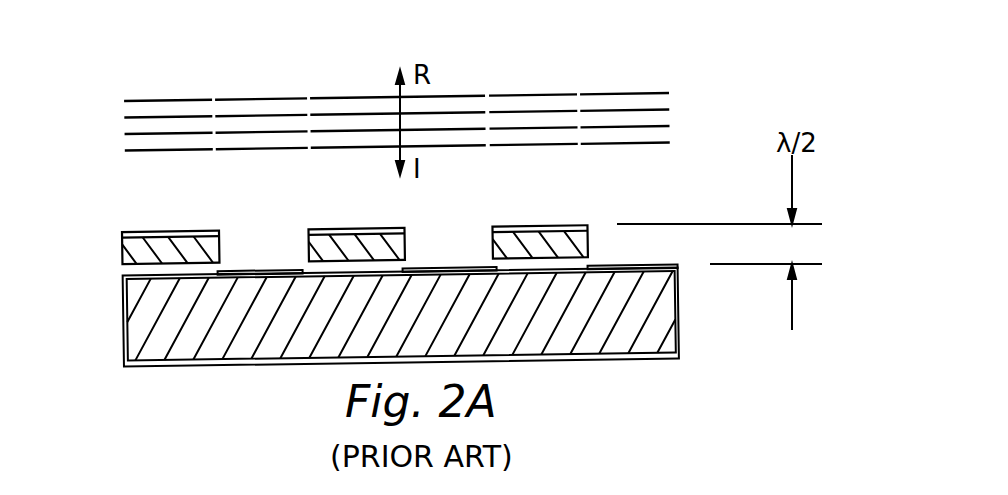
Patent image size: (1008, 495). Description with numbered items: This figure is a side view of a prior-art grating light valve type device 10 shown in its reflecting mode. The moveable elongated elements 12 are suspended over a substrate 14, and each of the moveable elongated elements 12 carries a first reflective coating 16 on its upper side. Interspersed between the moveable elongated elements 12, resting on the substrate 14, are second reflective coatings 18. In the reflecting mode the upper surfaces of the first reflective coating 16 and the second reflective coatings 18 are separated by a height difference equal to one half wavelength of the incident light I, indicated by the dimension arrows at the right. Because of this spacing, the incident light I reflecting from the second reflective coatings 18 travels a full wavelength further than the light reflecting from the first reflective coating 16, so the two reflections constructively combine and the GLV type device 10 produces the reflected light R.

The GLV type device 10 is at (708, 88).
The moveable elongated elements 12 is at (307, 215).
The substrate 14 is at (124, 329).
The first reflective coating 16 is at (170, 231).
The second reflective coatings 18 is at (267, 270).